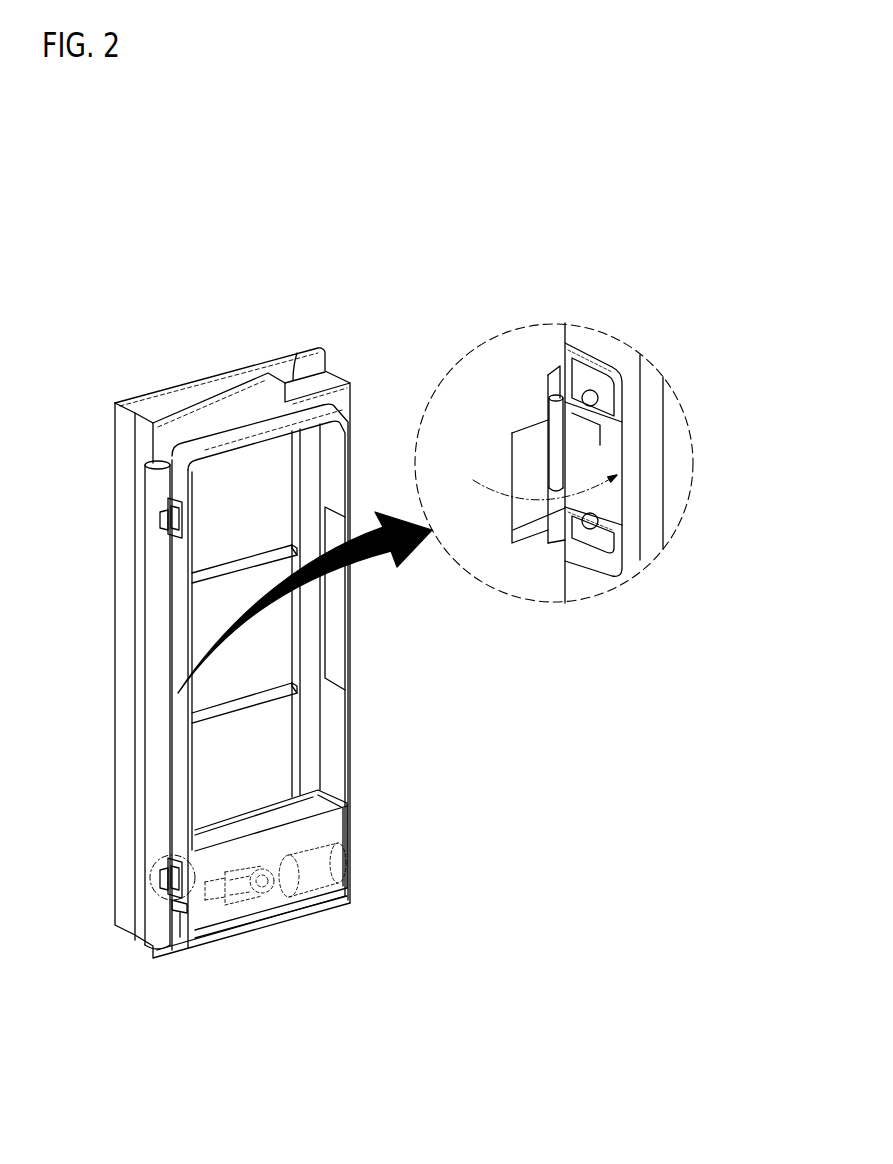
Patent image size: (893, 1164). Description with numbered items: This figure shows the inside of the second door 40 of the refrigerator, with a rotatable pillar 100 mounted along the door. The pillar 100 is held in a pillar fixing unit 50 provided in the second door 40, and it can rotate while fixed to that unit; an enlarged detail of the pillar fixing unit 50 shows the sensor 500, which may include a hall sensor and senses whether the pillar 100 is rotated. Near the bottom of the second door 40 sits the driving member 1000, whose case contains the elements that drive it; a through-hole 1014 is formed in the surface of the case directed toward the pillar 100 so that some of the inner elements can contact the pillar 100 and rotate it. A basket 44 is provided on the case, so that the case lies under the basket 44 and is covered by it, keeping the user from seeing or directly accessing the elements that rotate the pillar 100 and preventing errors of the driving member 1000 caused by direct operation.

The second door 40 is at (125, 491).
The pillar 100 is at (163, 695).
The basket 44 is at (320, 832).
The driving member 1000 is at (250, 904).
The through-hole 1014 is at (180, 917).
The pillar fixing unit 50 is at (587, 460).
The sensor 500 is at (620, 480).